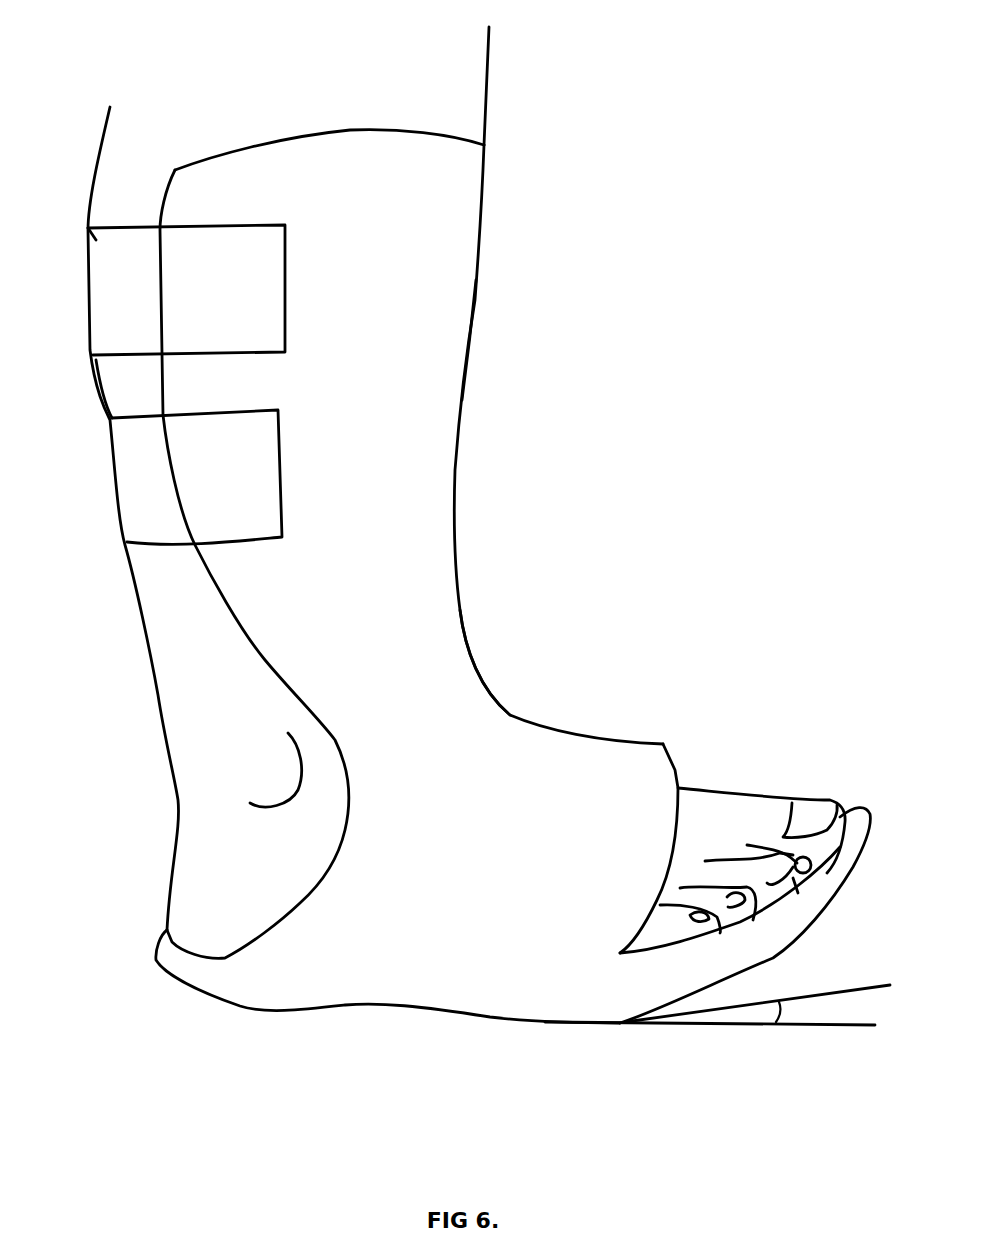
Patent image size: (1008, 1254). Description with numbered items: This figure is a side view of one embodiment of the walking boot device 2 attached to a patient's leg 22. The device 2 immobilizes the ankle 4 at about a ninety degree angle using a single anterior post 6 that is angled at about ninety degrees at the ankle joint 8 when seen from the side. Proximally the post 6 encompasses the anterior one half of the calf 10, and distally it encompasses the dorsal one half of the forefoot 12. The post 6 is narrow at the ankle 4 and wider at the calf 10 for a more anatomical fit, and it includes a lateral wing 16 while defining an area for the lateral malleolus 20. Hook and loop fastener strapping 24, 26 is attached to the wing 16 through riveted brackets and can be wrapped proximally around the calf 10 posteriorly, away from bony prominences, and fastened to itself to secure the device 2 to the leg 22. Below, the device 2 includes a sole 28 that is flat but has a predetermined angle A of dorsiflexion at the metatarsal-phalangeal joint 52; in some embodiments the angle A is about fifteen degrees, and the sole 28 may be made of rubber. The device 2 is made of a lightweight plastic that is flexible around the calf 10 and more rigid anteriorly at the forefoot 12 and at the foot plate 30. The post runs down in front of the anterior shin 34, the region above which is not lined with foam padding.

The walking boot device 2 is at (532, 370).
The ankle 4 is at (158, 697).
The anterior post 6 is at (480, 248).
The ankle joint 8 is at (478, 655).
The calf 10 is at (113, 360).
The forefoot 12 is at (683, 783).
The lateral wing 16 is at (193, 375).
The lateral malleolus 20 is at (247, 775).
The leg 22 is at (498, 33).
The hook and loop fastener strapping 24 is at (88, 318).
The hook and loop fastener strapping 26 is at (129, 487).
The sole 28 is at (565, 1024).
The foot plate 30 is at (492, 950).
The anterior shin 34 is at (477, 297).
The metatarsal-phalangeal joint 52 is at (730, 790).
The angle of dorsiflexion A is at (717, 1005).